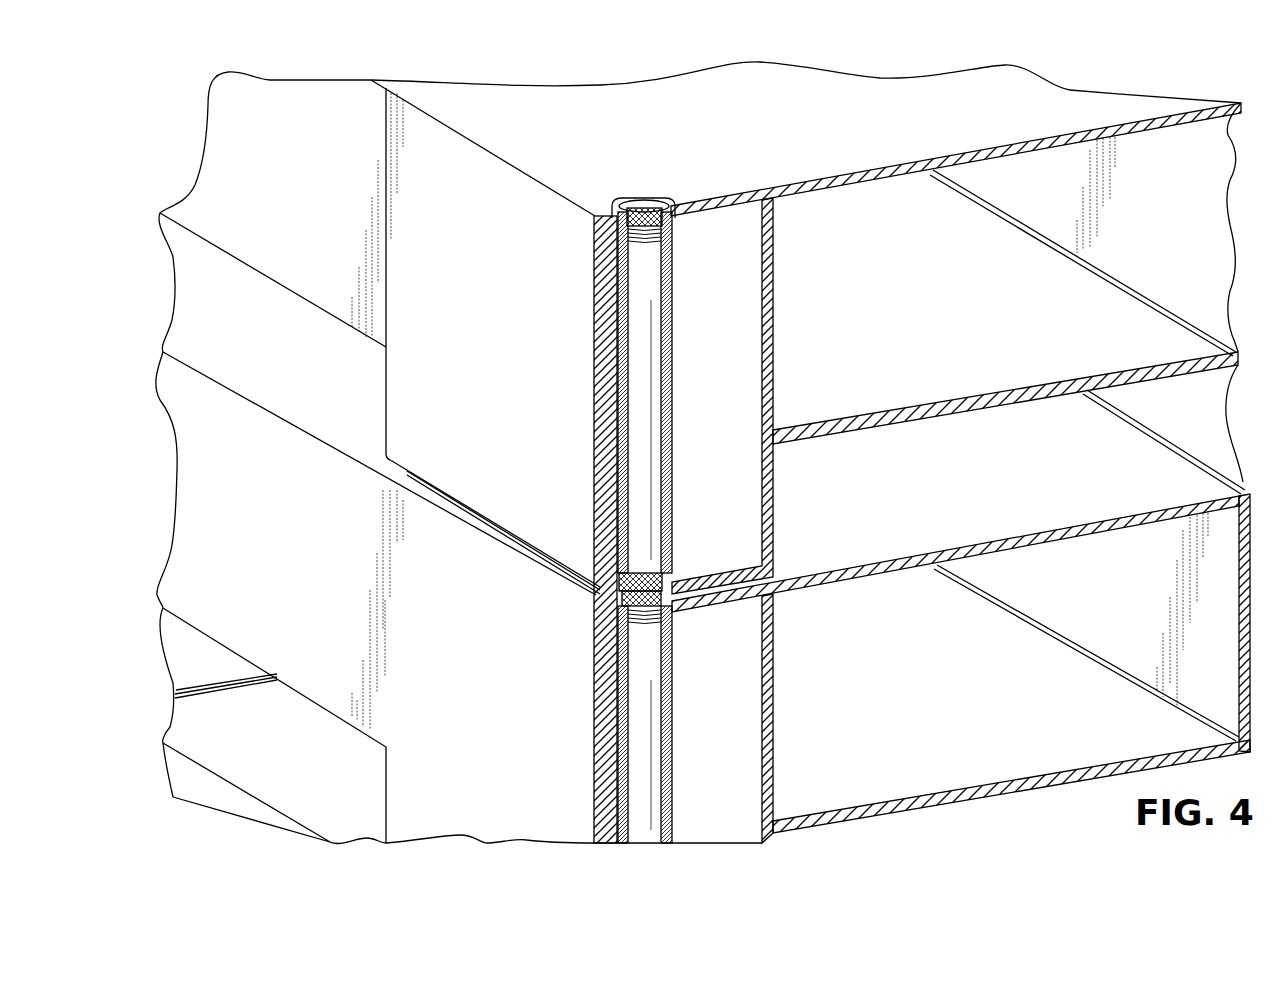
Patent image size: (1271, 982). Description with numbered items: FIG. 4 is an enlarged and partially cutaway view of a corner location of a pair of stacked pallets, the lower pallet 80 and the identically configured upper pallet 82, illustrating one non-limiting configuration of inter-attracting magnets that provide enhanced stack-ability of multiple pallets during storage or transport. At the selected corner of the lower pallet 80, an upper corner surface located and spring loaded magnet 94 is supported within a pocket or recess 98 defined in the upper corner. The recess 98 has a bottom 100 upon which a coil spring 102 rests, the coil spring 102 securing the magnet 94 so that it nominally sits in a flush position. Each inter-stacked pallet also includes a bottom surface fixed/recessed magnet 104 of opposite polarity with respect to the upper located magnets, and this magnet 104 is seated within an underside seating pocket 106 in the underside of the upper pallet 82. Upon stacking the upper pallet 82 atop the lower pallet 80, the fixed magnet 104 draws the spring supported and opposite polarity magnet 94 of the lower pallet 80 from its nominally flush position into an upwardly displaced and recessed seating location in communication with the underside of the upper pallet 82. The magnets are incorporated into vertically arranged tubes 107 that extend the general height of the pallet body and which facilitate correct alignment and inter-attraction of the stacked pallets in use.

The lower pallet 80 is at (463, 690).
The upper pallet 82 is at (476, 269).
The spring loaded magnet 94 is at (641, 207).
The pocket or recess 98 is at (626, 240).
The bottom 100 is at (659, 247).
The coil spring 102 is at (670, 224).
The bottom surface fixed/recessed magnet 104 is at (662, 565).
The underside seating pocket 106 is at (596, 596).
The vertically arranged tubes 107 is at (645, 372).